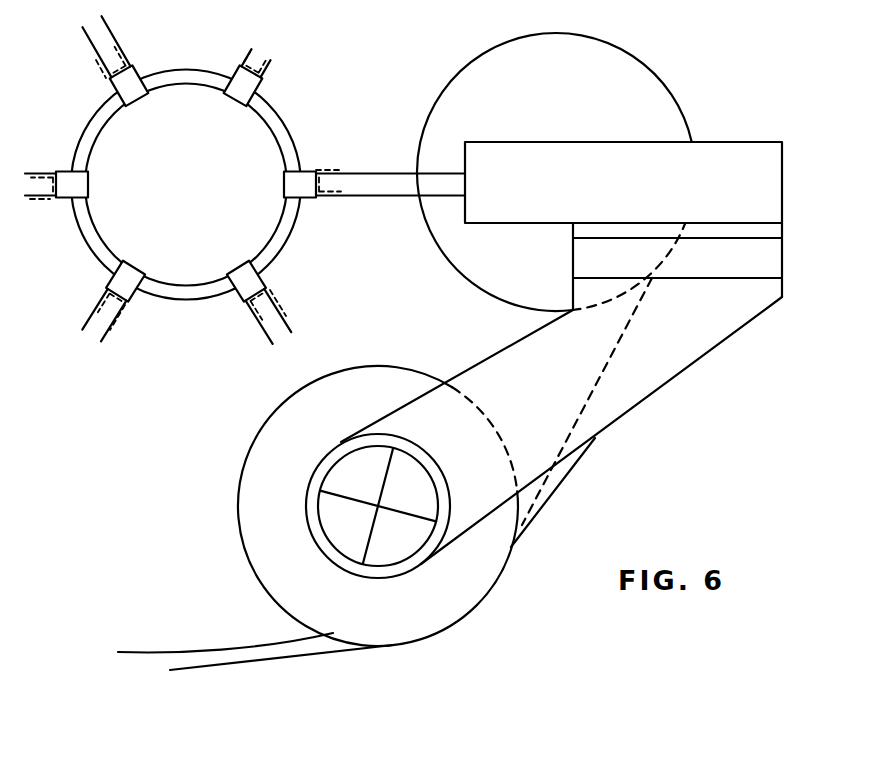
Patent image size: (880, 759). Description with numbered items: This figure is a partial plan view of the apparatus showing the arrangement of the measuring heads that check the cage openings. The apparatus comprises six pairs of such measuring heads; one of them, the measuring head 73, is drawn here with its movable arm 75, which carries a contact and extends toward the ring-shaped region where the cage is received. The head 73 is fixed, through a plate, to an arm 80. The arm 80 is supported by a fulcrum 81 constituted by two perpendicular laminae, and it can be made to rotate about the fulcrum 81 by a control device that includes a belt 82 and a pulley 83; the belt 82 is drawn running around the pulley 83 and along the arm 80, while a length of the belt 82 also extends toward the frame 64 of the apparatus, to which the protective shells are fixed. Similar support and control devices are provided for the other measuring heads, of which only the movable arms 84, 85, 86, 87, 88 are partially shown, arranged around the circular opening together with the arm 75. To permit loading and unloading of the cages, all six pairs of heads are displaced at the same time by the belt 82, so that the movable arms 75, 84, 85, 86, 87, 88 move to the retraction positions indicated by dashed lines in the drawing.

The frame 64 is at (138, 655).
The measuring head 73 is at (528, 152).
The movable arm 75 is at (403, 183).
The arm 80 is at (647, 387).
The fulcrum 81 is at (393, 493).
The belt 82 is at (525, 528).
The pulley 83 is at (263, 440).
The movable arm 84 is at (262, 85).
The movable arm 85 is at (134, 72).
The movable arm 86 is at (69, 172).
The movable arm 87 is at (113, 278).
The movable arm 88 is at (233, 298).